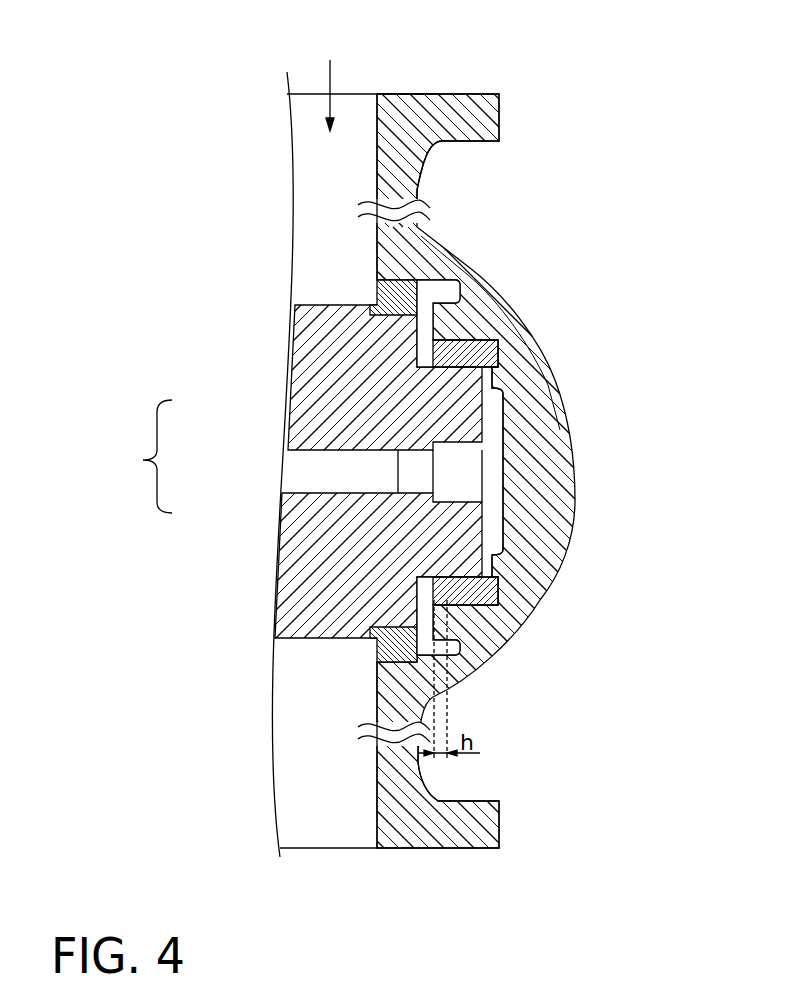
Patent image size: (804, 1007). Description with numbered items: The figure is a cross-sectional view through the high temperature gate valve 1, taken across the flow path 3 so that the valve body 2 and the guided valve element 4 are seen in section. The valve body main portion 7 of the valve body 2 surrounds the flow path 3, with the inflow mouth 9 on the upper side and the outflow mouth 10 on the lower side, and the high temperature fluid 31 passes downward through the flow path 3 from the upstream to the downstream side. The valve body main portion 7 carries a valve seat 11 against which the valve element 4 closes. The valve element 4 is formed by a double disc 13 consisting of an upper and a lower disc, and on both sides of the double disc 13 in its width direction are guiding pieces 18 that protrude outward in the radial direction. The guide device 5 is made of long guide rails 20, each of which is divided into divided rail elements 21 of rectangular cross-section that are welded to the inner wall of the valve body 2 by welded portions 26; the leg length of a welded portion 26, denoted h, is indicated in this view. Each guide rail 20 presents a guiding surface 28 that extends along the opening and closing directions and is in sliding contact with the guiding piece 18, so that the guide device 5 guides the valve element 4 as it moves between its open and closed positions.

The high temperature gate valve 1 is at (510, 108).
The valve body 2 is at (487, 670).
The flow path 3 is at (338, 181).
The valve element 4 is at (301, 456).
The guide device 5 is at (503, 337).
The valve body main portion 7 is at (468, 258).
The inflow mouth 9 is at (353, 110).
The outflow mouth 10 is at (330, 830).
The valve seat 11 is at (385, 295).
The double disc 13 is at (290, 408).
The guiding piece 18 is at (483, 431).
The guide rail 20 is at (465, 460).
The divided rail element 21 is at (470, 340).
The welded portion 26 is at (443, 343).
The guiding surface 28 is at (470, 374).
The high temperature fluid 31 is at (327, 70).